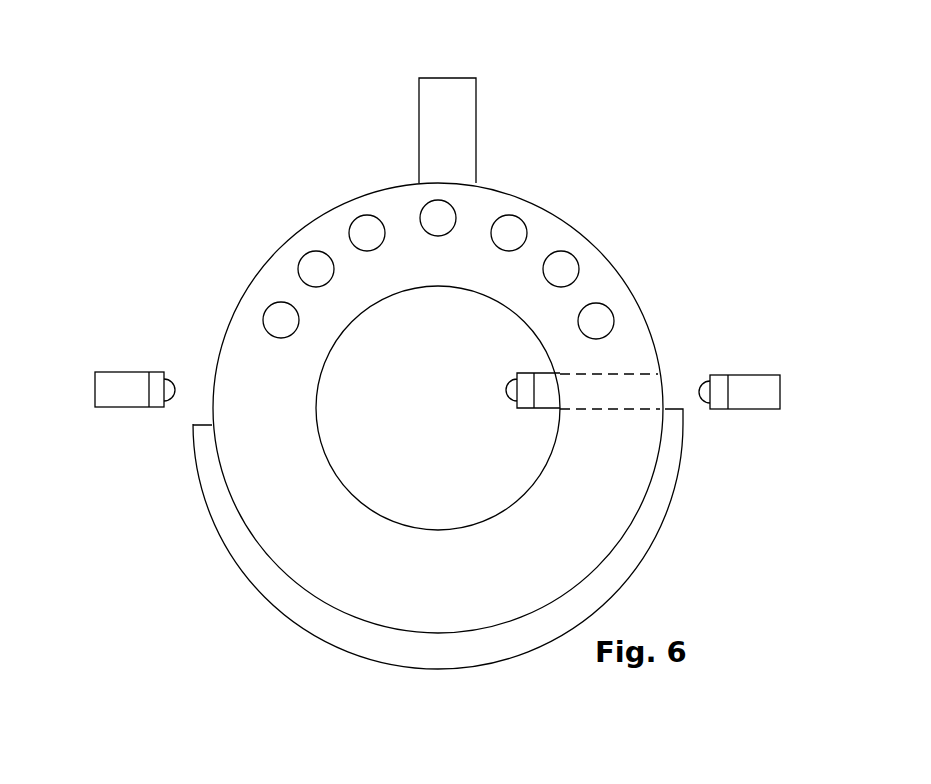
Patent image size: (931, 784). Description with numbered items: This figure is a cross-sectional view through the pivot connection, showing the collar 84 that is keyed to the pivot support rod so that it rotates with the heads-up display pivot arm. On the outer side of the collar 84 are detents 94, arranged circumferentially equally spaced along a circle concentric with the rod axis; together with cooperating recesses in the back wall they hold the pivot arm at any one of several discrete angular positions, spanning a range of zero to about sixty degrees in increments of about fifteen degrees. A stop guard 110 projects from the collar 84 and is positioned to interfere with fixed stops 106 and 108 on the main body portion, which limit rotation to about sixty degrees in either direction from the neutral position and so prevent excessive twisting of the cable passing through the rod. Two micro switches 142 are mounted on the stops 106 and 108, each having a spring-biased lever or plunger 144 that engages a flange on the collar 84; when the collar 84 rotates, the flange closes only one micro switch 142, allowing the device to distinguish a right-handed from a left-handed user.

The collar 84 is at (252, 510).
The detents 94 is at (578, 260).
The stop guard 110 is at (447, 78).
The stop 106 is at (97, 392).
The stop 108 is at (780, 390).
The micro switch 142 is at (132, 372).
The spring-biased lever or plunger 144 is at (172, 380).